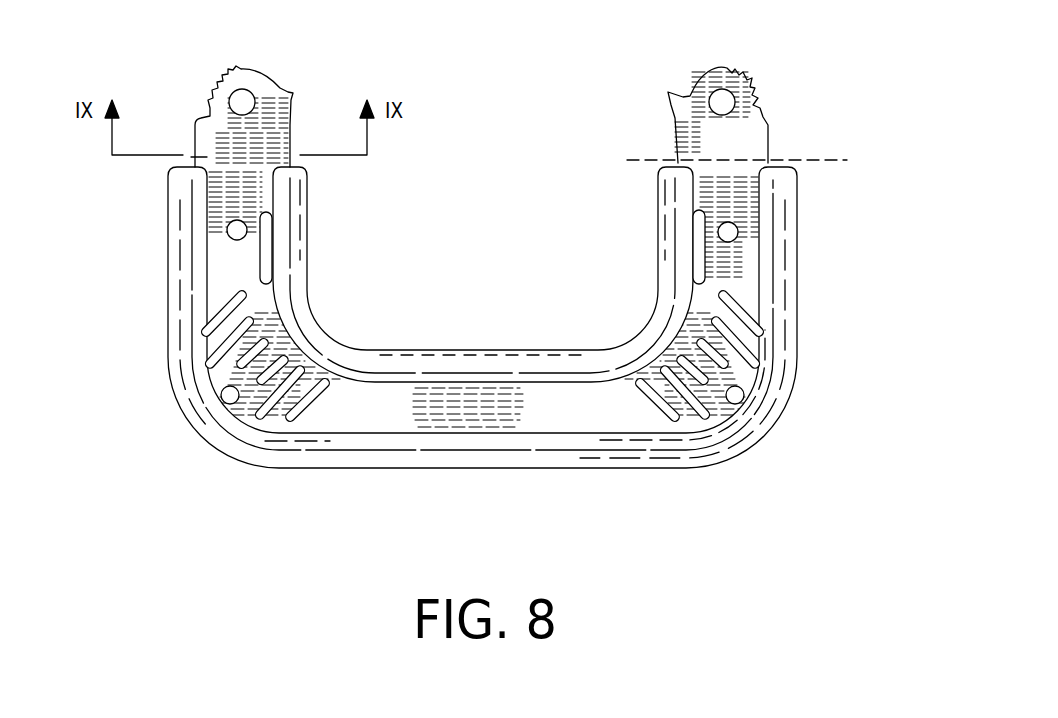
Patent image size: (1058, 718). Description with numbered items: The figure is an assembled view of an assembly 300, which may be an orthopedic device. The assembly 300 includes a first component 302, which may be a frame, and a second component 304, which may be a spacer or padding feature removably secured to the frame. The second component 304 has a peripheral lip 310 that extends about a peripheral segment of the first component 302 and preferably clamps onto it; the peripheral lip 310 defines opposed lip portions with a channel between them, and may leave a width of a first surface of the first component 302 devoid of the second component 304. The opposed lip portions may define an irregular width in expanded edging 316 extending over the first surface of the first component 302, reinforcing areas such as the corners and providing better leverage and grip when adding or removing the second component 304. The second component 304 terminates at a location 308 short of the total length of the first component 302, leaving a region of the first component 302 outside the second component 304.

The assembly 300 is at (475, 292).
The first component 302 is at (238, 272).
The second component 304 is at (363, 453).
The location 308 is at (223, 135).
The peripheral lip 310 is at (356, 354).
The expanded edging 316 is at (220, 413).